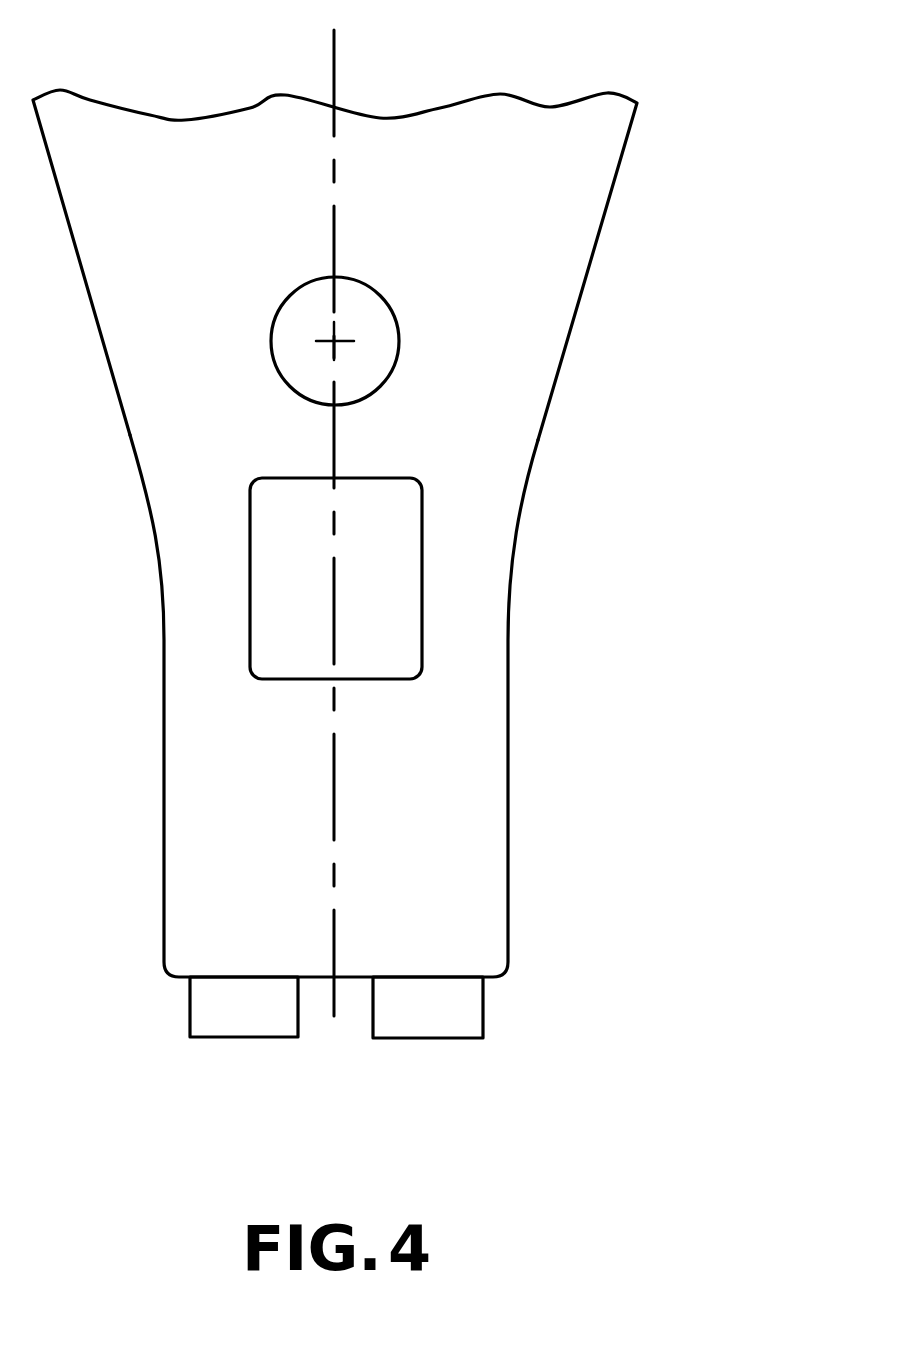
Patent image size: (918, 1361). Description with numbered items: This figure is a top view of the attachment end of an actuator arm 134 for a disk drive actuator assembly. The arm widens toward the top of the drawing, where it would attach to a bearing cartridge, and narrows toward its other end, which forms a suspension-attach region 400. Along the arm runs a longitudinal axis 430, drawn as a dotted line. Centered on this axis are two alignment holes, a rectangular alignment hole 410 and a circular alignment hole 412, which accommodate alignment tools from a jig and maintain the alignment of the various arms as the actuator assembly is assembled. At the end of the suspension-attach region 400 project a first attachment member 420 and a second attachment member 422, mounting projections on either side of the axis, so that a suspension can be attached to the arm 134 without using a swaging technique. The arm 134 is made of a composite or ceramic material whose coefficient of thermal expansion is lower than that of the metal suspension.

The actuator arm 134 is at (595, 258).
The suspension-attach region 400 is at (183, 950).
The alignment hole 410 is at (417, 528).
The alignment hole 412 is at (279, 320).
The first attachment member 420 is at (247, 1010).
The second attachment member 422 is at (437, 1017).
The longitudinal axis 430 is at (334, 77).